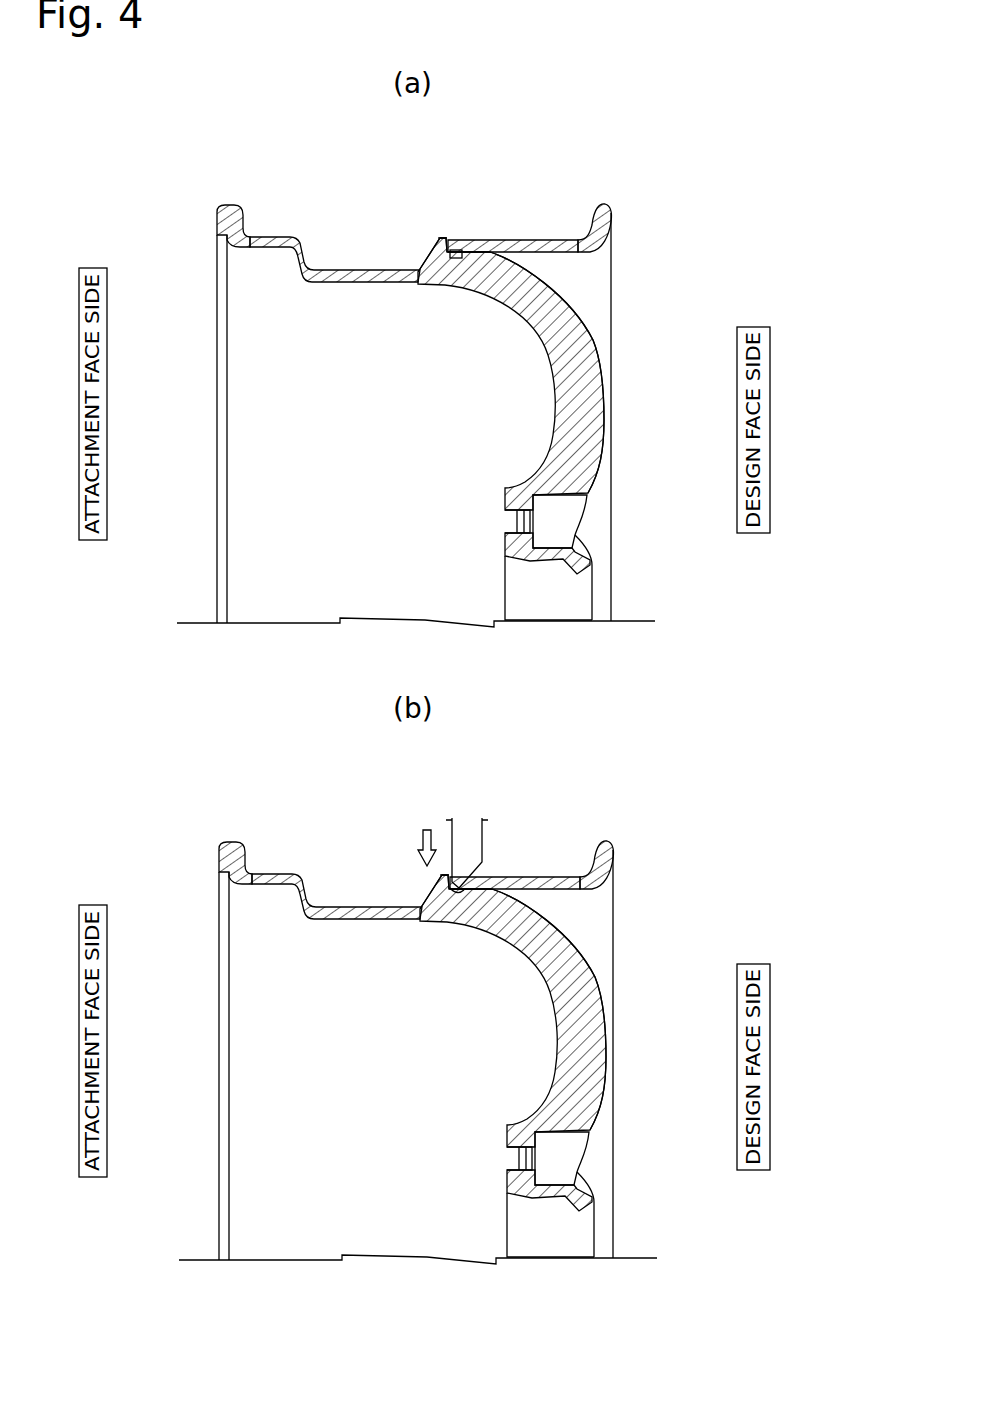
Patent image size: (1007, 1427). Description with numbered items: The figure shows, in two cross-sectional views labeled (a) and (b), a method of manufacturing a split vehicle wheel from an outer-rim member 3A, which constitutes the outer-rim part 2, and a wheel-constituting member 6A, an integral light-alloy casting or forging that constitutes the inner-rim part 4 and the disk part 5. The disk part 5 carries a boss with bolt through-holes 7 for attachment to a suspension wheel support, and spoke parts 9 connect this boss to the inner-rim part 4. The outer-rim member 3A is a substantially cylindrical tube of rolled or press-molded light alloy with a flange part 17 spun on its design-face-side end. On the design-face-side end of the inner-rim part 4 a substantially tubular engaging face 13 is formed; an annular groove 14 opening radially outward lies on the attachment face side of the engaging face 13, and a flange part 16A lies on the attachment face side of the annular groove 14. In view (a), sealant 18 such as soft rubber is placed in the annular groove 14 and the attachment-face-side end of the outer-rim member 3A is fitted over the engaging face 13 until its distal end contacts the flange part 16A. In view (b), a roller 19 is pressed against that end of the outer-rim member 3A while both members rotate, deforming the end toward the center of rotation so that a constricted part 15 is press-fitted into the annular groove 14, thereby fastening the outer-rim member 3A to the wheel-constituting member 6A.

The outer-rim part 2 is at (523, 240).
The outer-rim member 3A is at (563, 204).
The inner-rim part 4 is at (347, 270).
The disk part 5 is at (616, 360).
The wheel-constituting member 6A is at (286, 204).
The bolt through-holes 7 is at (558, 540).
The spoke parts 9 is at (603, 410).
The engaging face 13 is at (487, 250).
The annular groove 14 is at (443, 256).
The constricted part 15 is at (461, 897).
The flange part 16A is at (440, 236).
The flange part 17 is at (611, 213).
The sealant 18 is at (455, 249).
The roller 19 is at (465, 828).